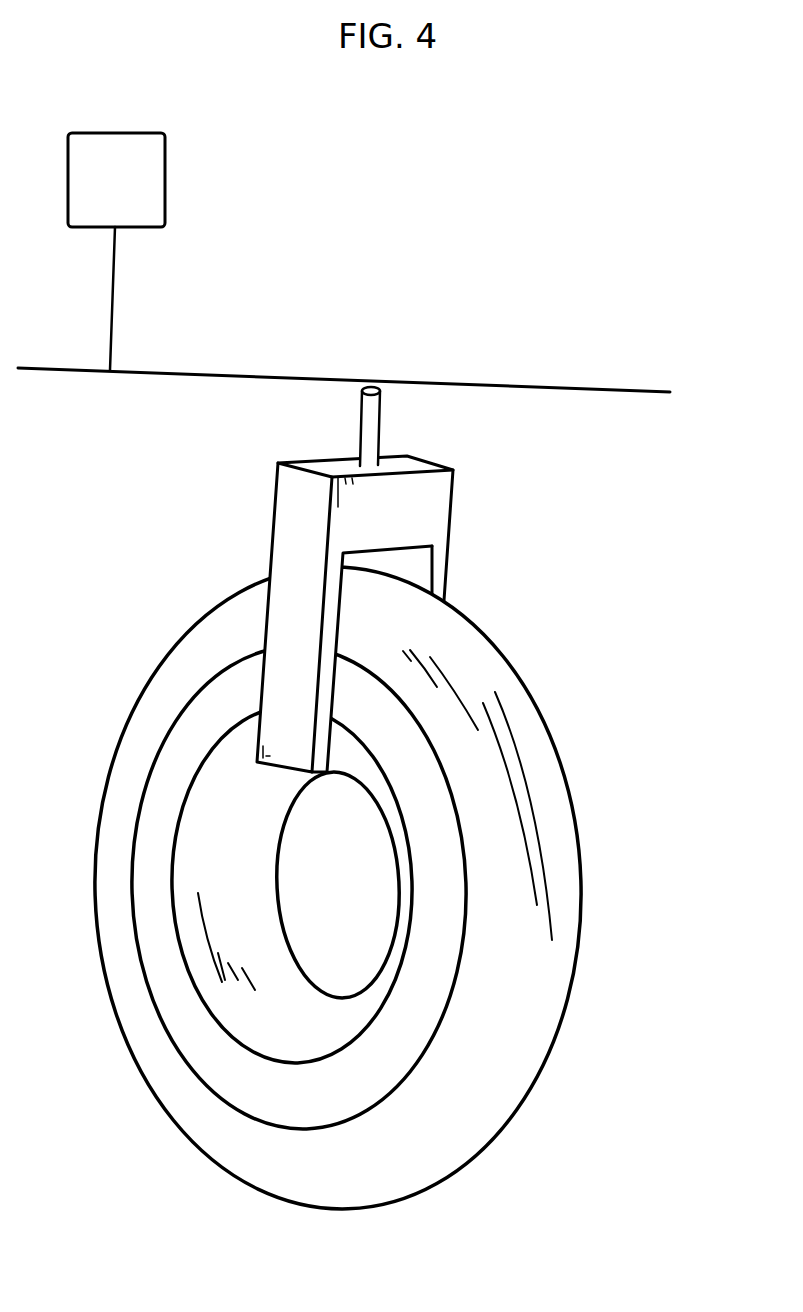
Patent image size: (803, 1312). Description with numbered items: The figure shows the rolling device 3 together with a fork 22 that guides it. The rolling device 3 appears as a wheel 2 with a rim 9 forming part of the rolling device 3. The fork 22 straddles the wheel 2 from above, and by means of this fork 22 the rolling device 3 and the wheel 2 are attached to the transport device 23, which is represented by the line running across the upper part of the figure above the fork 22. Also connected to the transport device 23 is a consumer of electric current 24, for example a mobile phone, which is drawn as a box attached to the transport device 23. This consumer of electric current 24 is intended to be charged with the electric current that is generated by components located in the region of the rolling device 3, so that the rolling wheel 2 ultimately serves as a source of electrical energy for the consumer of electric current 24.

The wheel 2 is at (380, 801).
The rolling device 3 is at (380, 801).
The rim 9 is at (414, 990).
The fork 22 is at (374, 801).
The transport device 23 is at (546, 384).
The consumer of electric current 24 is at (116, 251).